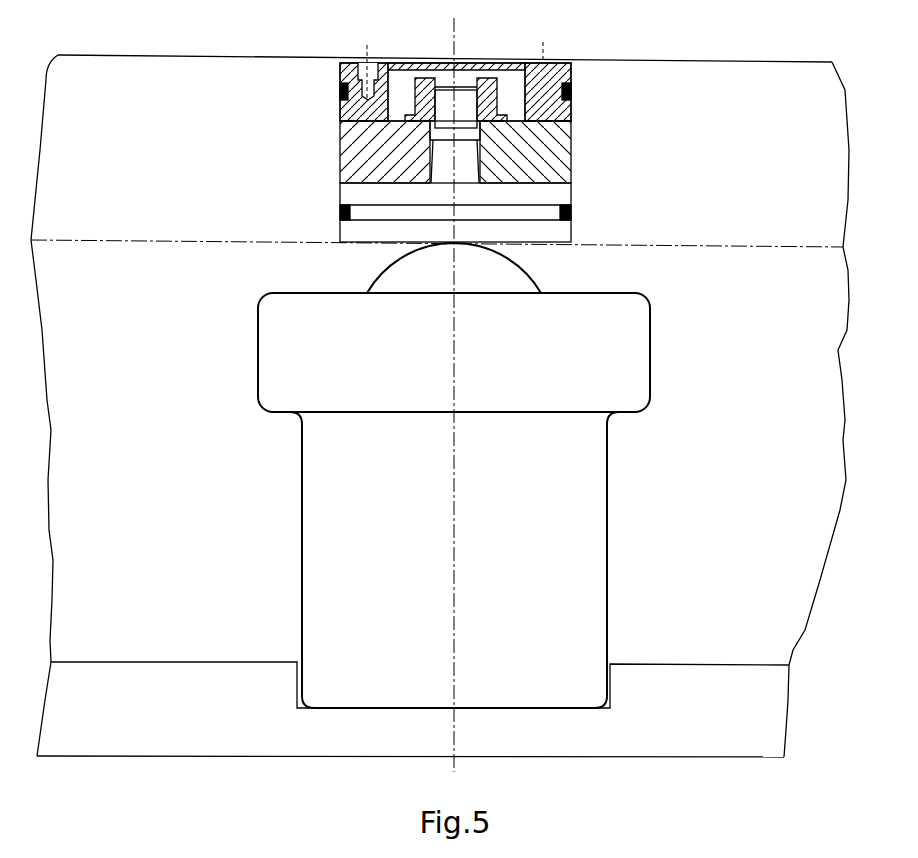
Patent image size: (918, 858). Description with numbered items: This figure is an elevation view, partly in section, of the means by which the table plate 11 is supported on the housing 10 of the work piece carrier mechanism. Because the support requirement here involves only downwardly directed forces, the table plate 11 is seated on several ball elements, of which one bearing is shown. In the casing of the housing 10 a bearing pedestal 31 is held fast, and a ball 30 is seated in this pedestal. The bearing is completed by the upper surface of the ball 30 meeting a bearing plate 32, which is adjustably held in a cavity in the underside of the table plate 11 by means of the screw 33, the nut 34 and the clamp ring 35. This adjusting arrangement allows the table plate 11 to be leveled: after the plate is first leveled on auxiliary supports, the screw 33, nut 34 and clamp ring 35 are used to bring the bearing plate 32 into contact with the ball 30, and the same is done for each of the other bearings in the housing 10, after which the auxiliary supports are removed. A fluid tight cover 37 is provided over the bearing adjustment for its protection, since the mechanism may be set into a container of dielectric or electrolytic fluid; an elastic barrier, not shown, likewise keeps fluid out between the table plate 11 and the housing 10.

The housing 10 is at (612, 741).
The table plate 11 is at (703, 172).
The ball 30 is at (437, 277).
The bearing pedestal 31 is at (426, 557).
The bearing plate 32 is at (377, 197).
The screw 33 is at (447, 158).
The nut 34 is at (425, 88).
The clamp ring 35 is at (385, 140).
The fluid tight cover 37 is at (538, 78).